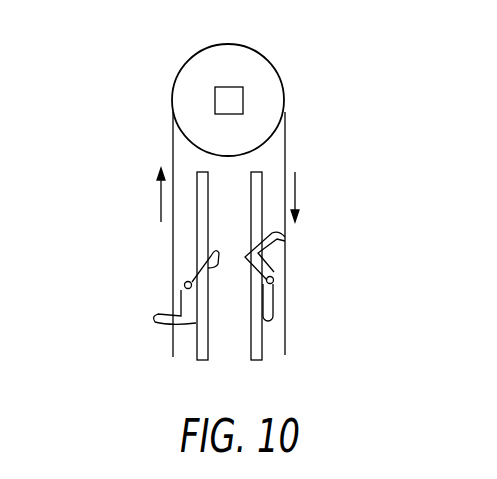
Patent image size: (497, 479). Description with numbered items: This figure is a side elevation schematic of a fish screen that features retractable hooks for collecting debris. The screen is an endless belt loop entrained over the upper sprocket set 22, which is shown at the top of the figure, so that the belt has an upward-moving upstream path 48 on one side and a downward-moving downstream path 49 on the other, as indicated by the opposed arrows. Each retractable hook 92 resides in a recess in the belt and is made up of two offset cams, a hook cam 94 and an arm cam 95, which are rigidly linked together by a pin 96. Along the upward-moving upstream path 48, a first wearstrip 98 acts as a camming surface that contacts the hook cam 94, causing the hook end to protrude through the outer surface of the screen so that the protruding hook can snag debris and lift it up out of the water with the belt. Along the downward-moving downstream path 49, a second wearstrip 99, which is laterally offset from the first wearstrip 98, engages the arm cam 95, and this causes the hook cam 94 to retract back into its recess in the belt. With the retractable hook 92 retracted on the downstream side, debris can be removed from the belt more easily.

The upper sprocket set 22 is at (253, 60).
The upward-moving upstream path 48 is at (173, 165).
The downward-moving downstream path 49 is at (285, 155).
The retractable hook 92 is at (267, 305).
The hook cam 94 is at (160, 326).
The arm cam 95 is at (193, 274).
The pin 96 is at (184, 286).
The first wearstrip 98 is at (207, 343).
The second wearstrip 99 is at (257, 348).